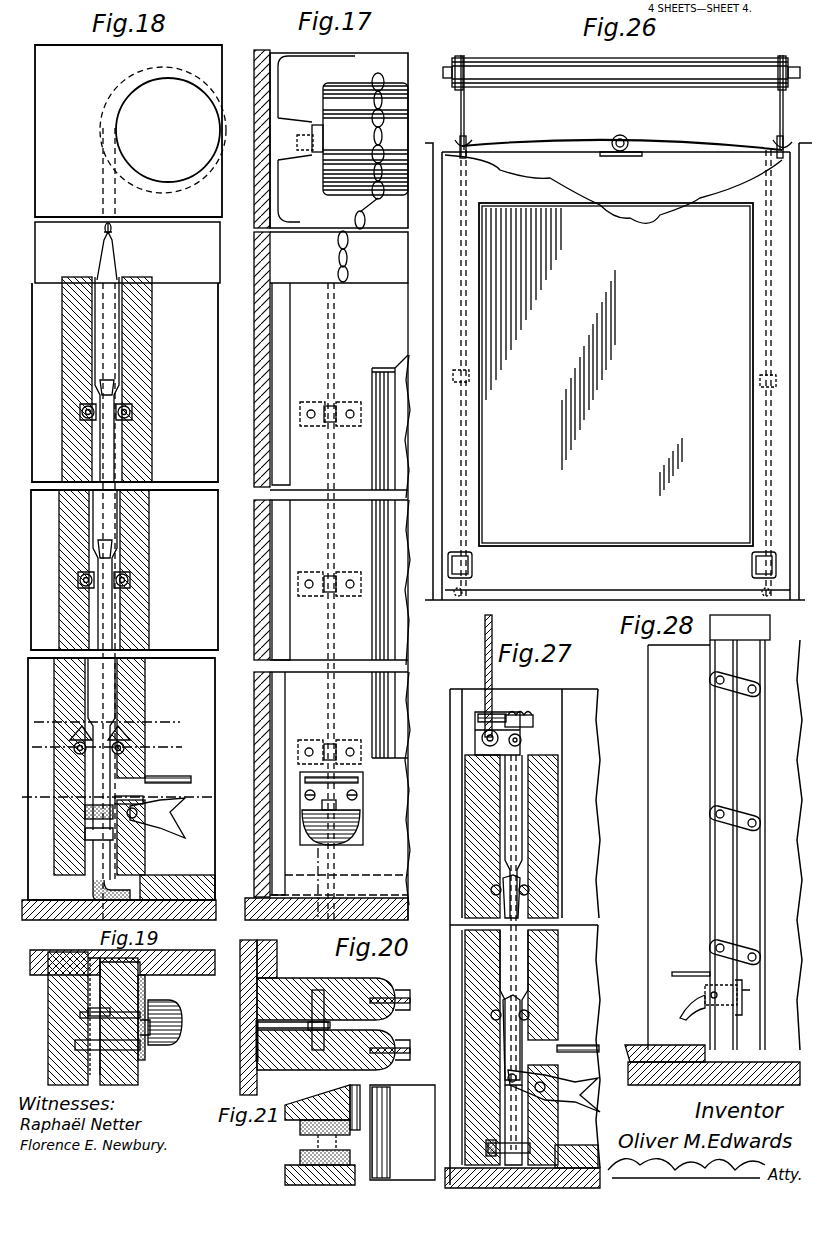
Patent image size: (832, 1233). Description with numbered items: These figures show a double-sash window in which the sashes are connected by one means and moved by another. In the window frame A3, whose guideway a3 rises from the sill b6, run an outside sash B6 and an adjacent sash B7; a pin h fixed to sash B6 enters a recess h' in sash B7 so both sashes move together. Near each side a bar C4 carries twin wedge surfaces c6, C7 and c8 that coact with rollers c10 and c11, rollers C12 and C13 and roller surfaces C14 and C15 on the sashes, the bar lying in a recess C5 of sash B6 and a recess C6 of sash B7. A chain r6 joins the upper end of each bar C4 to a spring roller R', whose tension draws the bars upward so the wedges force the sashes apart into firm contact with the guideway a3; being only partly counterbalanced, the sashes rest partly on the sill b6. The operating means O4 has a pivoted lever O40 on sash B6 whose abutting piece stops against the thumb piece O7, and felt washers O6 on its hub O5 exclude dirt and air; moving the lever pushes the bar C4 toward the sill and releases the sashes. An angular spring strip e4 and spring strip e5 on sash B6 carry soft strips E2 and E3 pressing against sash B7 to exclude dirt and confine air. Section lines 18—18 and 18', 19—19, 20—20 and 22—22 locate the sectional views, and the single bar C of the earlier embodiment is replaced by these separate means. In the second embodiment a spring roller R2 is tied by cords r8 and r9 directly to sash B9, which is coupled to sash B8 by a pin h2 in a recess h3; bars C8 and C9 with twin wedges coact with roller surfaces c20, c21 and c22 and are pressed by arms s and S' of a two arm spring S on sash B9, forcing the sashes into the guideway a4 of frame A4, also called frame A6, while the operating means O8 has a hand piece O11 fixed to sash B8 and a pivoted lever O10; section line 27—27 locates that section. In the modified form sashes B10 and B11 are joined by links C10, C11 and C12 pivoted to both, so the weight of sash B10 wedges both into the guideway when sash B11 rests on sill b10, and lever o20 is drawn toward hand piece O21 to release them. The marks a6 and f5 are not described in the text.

In FIG. 18, the spring roller R' is at (163, 130).
In FIG. 17, the spring roller R' is at (352, 139).
In FIG. 26, the spring roller R2 is at (585, 78).
In FIG. 18, the chain r6 is at (101, 197).
In FIG. 17, the chain r6 is at (367, 160).
In FIG. 26, the cord r8 is at (472, 327).
In FIG. 27, the cord r8 is at (486, 662).
In FIG. 26, the cord r9 is at (772, 327).
In FIG. 17, the bar C is at (328, 458).
In FIG. 18, the bar C4 is at (118, 268).
In FIG. 19, the bar C4 is at (88, 1012).
In FIG. 17, the bar C4 is at (338, 268).
In FIG. 18, the recess C5 is at (107, 854).
In FIG. 18, the recess C6 is at (85, 838).
In FIG. 18, the twin wedge surfaces c6 is at (101, 729).
In FIG. 18, the twin wedge surfaces C7 is at (107, 543).
In FIG. 18, the twin wedge surfaces c8 is at (108, 378).
In FIG. 26, the bar C8 is at (470, 190).
In FIG. 27, the bar C8 is at (520, 838).
In FIG. 26, the bar C9 is at (766, 193).
In FIG. 18, the link or bar C10 is at (124, 750).
In FIG. 28, the link or bar C10 is at (748, 946).
In FIG. 18, the link or bar C11 is at (75, 750).
In FIG. 28, the link or bar C11 is at (748, 812).
In FIG. 18, the link or bar C12 is at (128, 580).
In FIG. 28, the link or bar C12 is at (748, 678).
In FIG. 18, the roller surface C13 is at (80, 580).
In FIG. 18, the roller surface C14 is at (130, 410).
In FIG. 18, the roller surface C15 is at (84, 410).
In FIG. 27, the roller c10 is at (514, 1005).
In FIG. 27, the roller c11 is at (513, 898).
In FIG. 27, the roller surface c20 is at (530, 1015).
In FIG. 27, the roller surface c21 is at (490, 890).
In FIG. 27, the roller surface c22 is at (530, 890).
In FIG. 18, the window frame A3 is at (110, 639).
In FIG. 19, the window frame A3 is at (122, 951).
In FIG. 20, the window frame A3 is at (253, 1017).
In FIG. 17, the window frame A3 is at (265, 384).
In FIG. 27, the frame A4 is at (572, 959).
In FIG. 28, the frame A6 is at (679, 865).
In FIG. 19, the guideway a3 is at (88, 934).
In FIG. 20, the guideway a3 is at (257, 1022).
In FIG. 17, the guideway a3 is at (270, 662).
In FIG. 27, the guideway a4 is at (518, 698).
In FIG. 28, the frame head a6 is at (740, 627).
In FIG. 18, the sash B6 is at (140, 608).
In FIG. 19, the sash B6 is at (119, 1021).
In FIG. 20, the sash B6 is at (326, 1061).
In FIG. 21, the sash B6 is at (322, 1107).
In FIG. 17, the sash B6 is at (354, 808).
In FIG. 18, the sash B7 is at (60, 617).
In FIG. 19, the sash B7 is at (68, 1018).
In FIG. 20, the sash B7 is at (326, 989).
In FIG. 26, the sash B8 is at (616, 379).
In FIG. 27, the sash B8 is at (543, 960).
In FIG. 26, the sash B9 is at (613, 189).
In FIG. 27, the sash B9 is at (482, 960).
In FIG. 28, the sash B10 is at (724, 845).
In FIG. 28, the sash B11 is at (751, 845).
In FIG. 18, the sill b6 is at (44, 926).
In FIG. 28, the sill b10 is at (714, 1075).
In FIG. 18, the strip of soft yielding material E2 is at (92, 878).
In FIG. 19, the strip of soft yielding material E3 is at (76, 999).
In FIG. 20, the strip of soft yielding material E3 is at (257, 1040).
In FIG. 18, the spring strip e4 is at (112, 885).
In FIG. 19, the spring strip e5 is at (146, 982).
In FIG. 20, the fastening f5 is at (299, 1020).
In FIG. 19, the pin or projection h is at (147, 1066).
In FIG. 18, the recess h' is at (71, 816).
In FIG. 19, the recess h' is at (82, 1035).
In FIG. 26, the pin or projection h2 is at (462, 590).
In FIG. 27, the pin or projection h2 is at (501, 1142).
In FIG. 26, the recess h3 is at (762, 590).
In FIG. 27, the recess h3 is at (530, 1145).
In FIG. 18, the operating means O4 is at (178, 793).
In FIG. 19, the operating means O4 is at (198, 1020).
In FIG. 21, the operating means O4 is at (300, 1155).
In FIG. 17, the operating means O4 is at (362, 826).
In FIG. 18, the hub O5 is at (142, 791).
In FIG. 21, the hub O5 is at (328, 1116).
In FIG. 18, the felt washer O6 is at (128, 841).
In FIG. 19, the felt washer O6 is at (176, 1020).
In FIG. 21, the felt washer O6 is at (307, 1141).
In FIG. 18, the thumb or hand piece O7 is at (178, 777).
In FIG. 17, the thumb or hand piece O7 is at (358, 780).
In FIG. 18, the operating means O8 is at (172, 810).
In FIG. 19, the operating means O8 is at (165, 1010).
In FIG. 17, the operating means O8 is at (322, 806).
In FIG. 27, the operating means O8 is at (554, 1086).
In FIG. 18, the pivoted lever O10 is at (172, 828).
In FIG. 21, the pivoted lever O10 is at (300, 1138).
In FIG. 27, the pivoted lever O10 is at (585, 1100).
In FIG. 28, the pivoted lever O10 is at (703, 995).
In FIG. 27, the thumb or hand piece O11 is at (588, 1046).
In FIG. 28, the thumb or hand piece O21 is at (686, 972).
In FIG. 21, the pivoted lever O40 is at (402, 1132).
In FIG. 17, the pivoted lever O40 is at (335, 845).
In FIG. 28, the pivoted lever o20 is at (689, 1018).
In FIG. 26, the two arm spring S is at (622, 135).
In FIG. 27, the two arm spring S is at (527, 716).
In FIG. 26, the arm s is at (470, 140).
In FIG. 27, the arm s is at (522, 740).
In FIG. 26, the arm S' is at (767, 156).
In FIG. 17, the section line 18 is at (318, 566).
In FIG. 20, the section line 18' is at (310, 930).
In FIG. 18, the section line 19 is at (118, 799).
In FIG. 18, the section line 20 is at (105, 722).
In FIG. 18, the section line 22 is at (102, 746).
In FIG. 26, the section line 27 is at (458, 132).